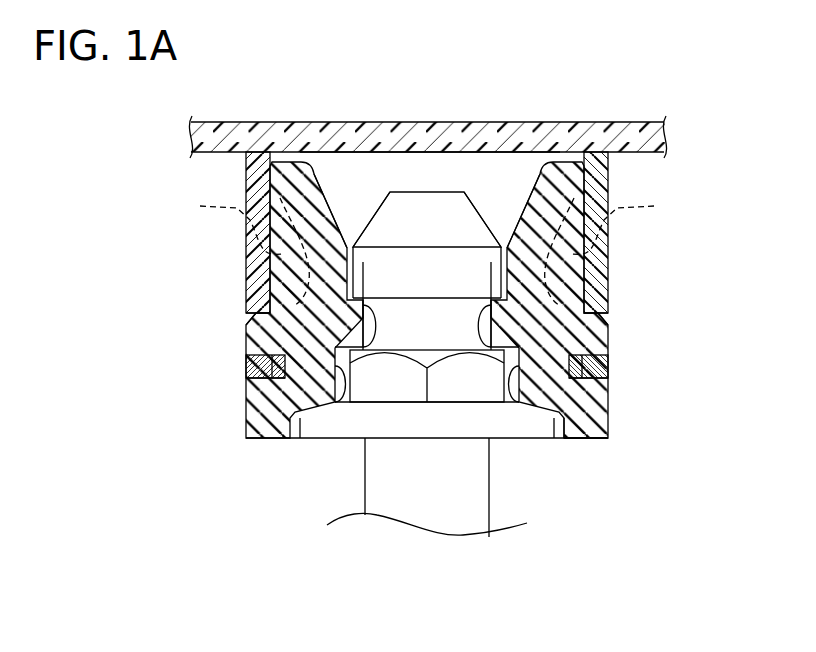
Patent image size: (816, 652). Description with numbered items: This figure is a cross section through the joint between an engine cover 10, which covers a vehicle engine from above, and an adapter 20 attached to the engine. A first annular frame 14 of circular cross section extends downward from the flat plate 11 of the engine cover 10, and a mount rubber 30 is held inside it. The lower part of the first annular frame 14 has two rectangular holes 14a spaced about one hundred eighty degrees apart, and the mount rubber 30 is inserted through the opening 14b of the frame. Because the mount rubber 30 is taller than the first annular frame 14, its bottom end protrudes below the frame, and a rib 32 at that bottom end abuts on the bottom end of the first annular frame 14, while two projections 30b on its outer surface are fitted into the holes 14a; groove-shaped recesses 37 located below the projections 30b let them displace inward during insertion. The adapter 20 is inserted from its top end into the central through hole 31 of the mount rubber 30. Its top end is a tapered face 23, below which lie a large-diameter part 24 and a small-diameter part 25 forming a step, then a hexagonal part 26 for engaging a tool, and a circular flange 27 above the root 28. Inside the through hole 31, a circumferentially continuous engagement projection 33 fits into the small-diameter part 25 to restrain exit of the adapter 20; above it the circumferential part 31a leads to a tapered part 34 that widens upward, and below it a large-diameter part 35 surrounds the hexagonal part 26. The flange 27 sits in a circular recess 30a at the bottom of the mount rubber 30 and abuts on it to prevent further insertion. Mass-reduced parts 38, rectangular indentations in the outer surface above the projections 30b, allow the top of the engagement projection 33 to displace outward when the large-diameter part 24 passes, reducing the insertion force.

The engine cover 10 is at (615, 111).
The flat plate 11 is at (564, 122).
The first annular frame 14 is at (608, 243).
The hole 14a is at (262, 313).
The opening 14b is at (557, 440).
The adapter 20 is at (472, 319).
The tapered face 23 is at (476, 207).
The large-diameter part 24 is at (502, 263).
The small-diameter part 25 is at (600, 280).
The hexagonal part 26 is at (512, 405).
The flange 27 is at (318, 430).
The root 28 is at (477, 515).
The mount rubber 30 is at (595, 451).
The recess 30a is at (297, 432).
The projection 30b is at (250, 328).
The through hole 31 is at (270, 364).
The circumferential part 31a is at (349, 265).
The rib 32 is at (603, 428).
The engagement projection 33 is at (584, 364).
The tapered part 34 is at (541, 176).
The large-diameter part 35 is at (342, 403).
The recess 37 is at (266, 376).
The mass-reduced part 38 is at (427, 247).